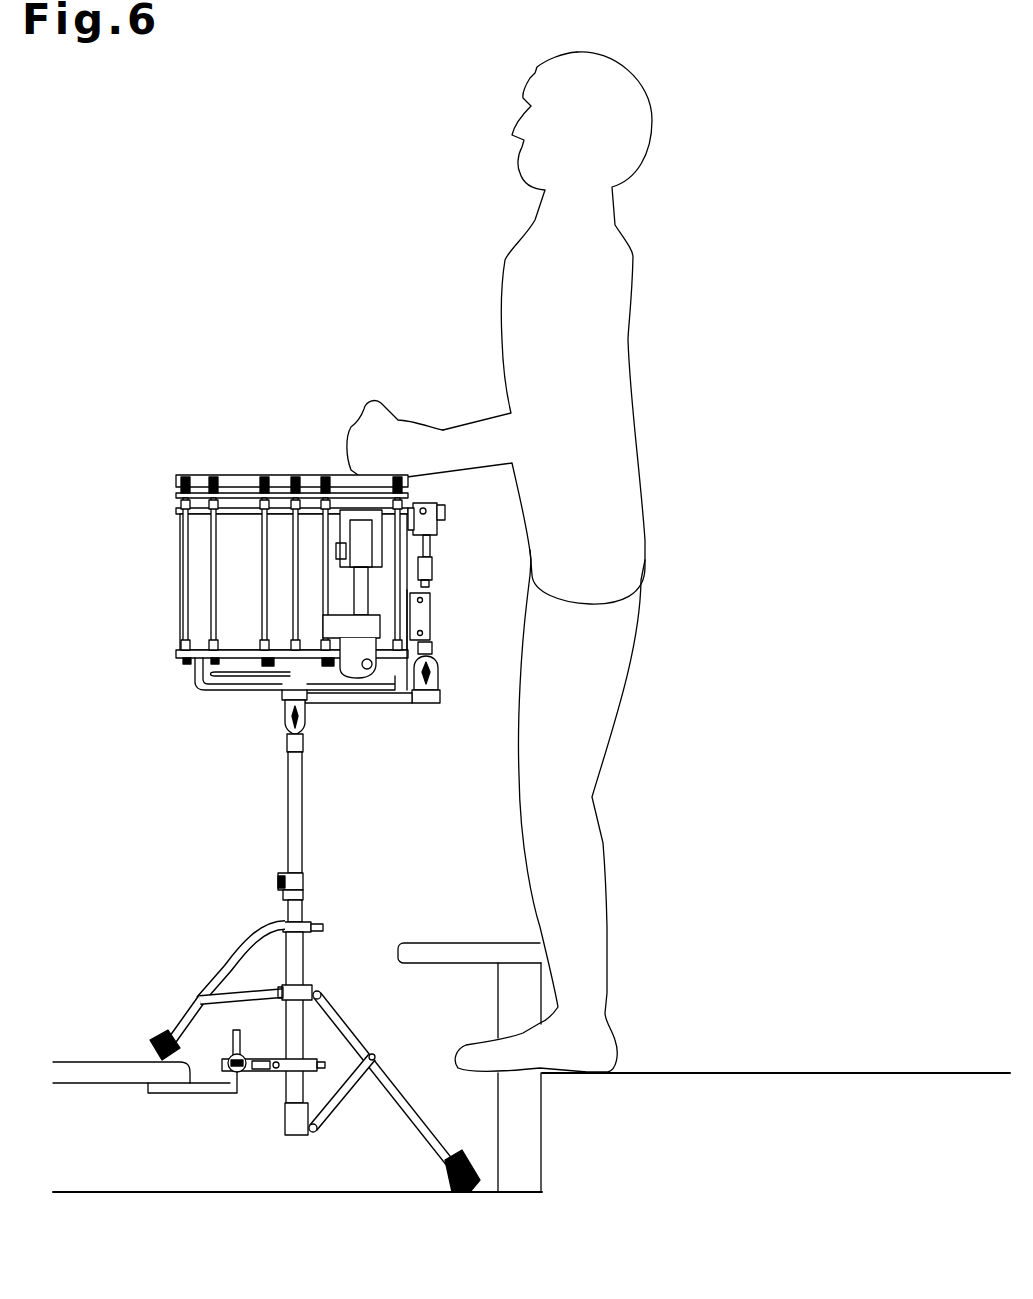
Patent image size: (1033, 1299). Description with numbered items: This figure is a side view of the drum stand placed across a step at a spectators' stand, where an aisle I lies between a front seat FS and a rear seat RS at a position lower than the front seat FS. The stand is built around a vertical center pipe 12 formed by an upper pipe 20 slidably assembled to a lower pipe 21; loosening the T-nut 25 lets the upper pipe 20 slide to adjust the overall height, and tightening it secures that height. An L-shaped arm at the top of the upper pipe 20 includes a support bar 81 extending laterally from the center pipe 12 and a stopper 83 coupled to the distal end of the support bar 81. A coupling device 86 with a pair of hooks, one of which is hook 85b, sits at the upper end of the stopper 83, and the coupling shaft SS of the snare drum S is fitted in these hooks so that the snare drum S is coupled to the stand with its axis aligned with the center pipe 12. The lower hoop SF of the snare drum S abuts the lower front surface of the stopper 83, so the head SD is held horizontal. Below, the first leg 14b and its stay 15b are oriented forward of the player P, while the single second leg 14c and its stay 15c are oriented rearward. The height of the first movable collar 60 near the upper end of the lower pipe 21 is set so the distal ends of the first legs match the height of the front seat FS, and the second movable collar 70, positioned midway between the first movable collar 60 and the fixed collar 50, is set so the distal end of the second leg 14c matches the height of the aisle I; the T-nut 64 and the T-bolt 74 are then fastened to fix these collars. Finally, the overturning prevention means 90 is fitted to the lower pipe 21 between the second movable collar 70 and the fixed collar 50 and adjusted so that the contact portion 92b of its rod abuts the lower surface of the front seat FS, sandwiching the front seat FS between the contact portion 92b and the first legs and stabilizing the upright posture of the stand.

The player P is at (653, 120).
The head SD is at (272, 554).
The snare drum S is at (180, 572).
The coupling shaft SS is at (426, 503).
The coupling device 86 is at (460, 515).
The hook 85b is at (437, 538).
The stopper 83 is at (432, 614).
The lower hoop SF is at (440, 658).
The support bar 81 is at (400, 703).
The center pipe 12 is at (297, 941).
The upper pipe 20 is at (302, 780).
The T-nut 25 is at (278, 878).
The first movable collar 60 is at (300, 922).
The T-nut 64 is at (323, 931).
The lower pipe 21 is at (303, 960).
The second movable collar 70 is at (314, 986).
The T-bolt 74 is at (284, 1002).
The first leg 14b is at (222, 970).
The stay 15b is at (188, 1008).
The second leg 14c is at (370, 1028).
The stay 15c is at (345, 1090).
The overturning prevention means 90 is at (264, 1072).
The contact portion 92b is at (176, 1093).
The fixed collar 50 is at (297, 1135).
The front seat FS is at (74, 1062).
The rear seat RS is at (480, 943).
The aisle I is at (350, 1192).